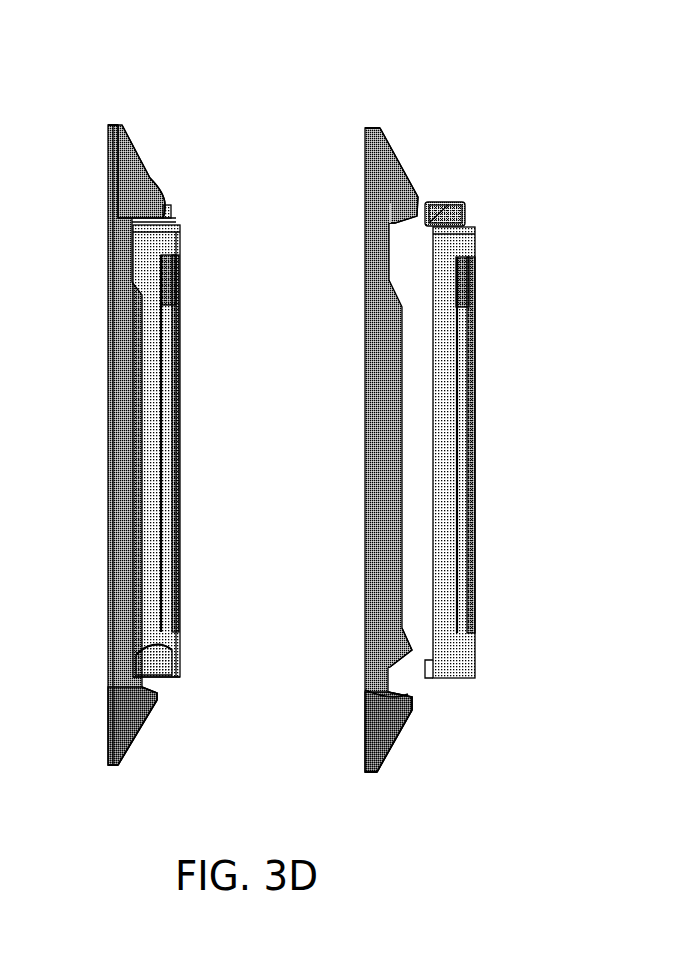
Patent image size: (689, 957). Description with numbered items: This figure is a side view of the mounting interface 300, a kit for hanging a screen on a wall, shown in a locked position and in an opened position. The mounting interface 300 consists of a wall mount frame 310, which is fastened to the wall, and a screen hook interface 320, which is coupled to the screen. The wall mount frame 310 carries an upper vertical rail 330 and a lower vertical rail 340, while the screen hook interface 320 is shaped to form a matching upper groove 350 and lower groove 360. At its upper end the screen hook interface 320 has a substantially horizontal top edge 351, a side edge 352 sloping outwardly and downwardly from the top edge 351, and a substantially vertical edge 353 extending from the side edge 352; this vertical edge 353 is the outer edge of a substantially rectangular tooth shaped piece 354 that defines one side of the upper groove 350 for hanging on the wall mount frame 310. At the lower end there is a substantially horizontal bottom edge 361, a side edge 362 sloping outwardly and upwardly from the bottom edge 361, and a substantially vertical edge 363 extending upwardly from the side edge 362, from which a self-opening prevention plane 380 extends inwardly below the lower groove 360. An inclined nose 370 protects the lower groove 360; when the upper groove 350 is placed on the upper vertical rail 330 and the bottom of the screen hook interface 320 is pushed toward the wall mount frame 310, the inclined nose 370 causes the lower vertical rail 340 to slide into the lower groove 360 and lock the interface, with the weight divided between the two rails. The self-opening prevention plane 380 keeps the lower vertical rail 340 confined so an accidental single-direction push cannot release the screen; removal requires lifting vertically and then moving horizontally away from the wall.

The mounting interface 300 is at (217, 97).
The wall mount frame 310 is at (172, 497).
The screen hook interface 320 is at (130, 490).
The upper vertical rail 330 is at (448, 205).
The lower vertical rail 340 is at (430, 679).
The upper groove 350 is at (148, 182).
The substantially horizontal top edge 351 is at (115, 124).
The side edge 352 is at (132, 124).
The substantially vertical edge 353 is at (161, 204).
The substantially rectangular tooth shaped piece 354 is at (171, 218).
The lower groove 360 is at (382, 669).
The substantially horizontal bottom edge 361 is at (112, 767).
The side edge 362 is at (130, 767).
The substantially vertical edge 363 is at (160, 693).
The inclined nose 370 is at (180, 677).
The self-opening prevention plane 380 is at (152, 697).